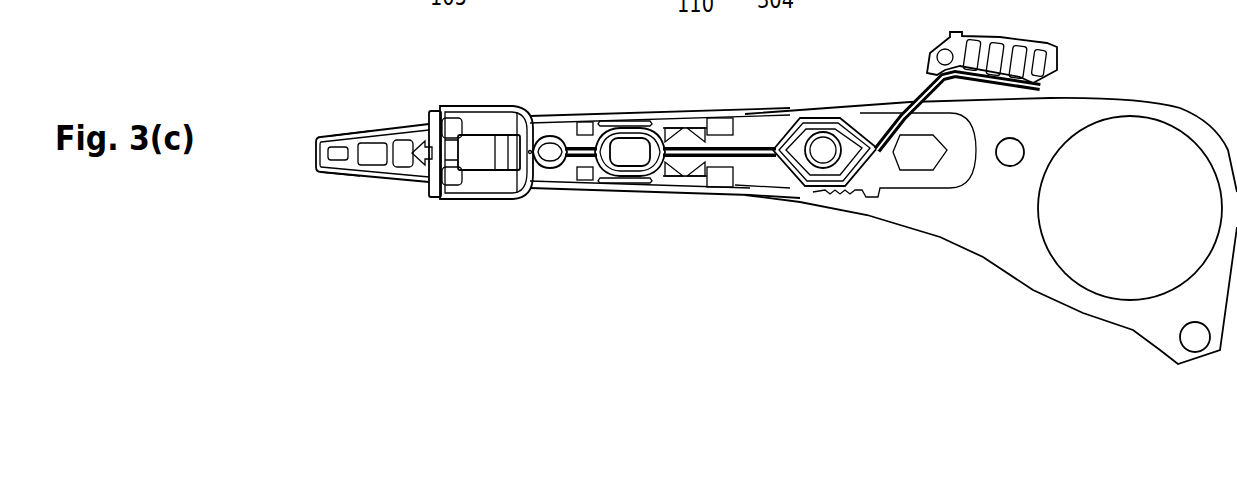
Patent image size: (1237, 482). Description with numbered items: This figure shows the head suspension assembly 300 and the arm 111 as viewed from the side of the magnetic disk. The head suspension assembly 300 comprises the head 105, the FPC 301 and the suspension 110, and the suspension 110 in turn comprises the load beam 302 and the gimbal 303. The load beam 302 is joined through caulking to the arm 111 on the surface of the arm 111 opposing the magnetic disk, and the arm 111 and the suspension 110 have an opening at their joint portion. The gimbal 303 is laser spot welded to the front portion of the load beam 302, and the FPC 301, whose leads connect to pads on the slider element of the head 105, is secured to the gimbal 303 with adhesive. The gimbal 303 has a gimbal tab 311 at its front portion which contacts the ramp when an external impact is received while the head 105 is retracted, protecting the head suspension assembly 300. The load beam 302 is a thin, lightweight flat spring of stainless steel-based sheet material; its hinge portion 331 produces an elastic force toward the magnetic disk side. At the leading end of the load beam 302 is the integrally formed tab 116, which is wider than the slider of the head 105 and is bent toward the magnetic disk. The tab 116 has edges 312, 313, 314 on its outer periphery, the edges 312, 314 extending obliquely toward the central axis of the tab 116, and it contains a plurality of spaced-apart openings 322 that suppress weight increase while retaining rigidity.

The head 105 is at (470, 163).
The suspension 110 is at (560, 101).
The arm 111 is at (952, 228).
The tab 116 is at (313, 163).
The head suspension assembly 300 is at (675, 243).
The FPC (flexible printed circuit) 301 is at (917, 90).
The load beam 302 is at (636, 110).
The gimbal 303 is at (510, 177).
The gimbal tab 311 is at (420, 122).
The edge 312 is at (325, 177).
The edge 313 is at (314, 150).
The edge 314 is at (347, 133).
The openings 322 is at (370, 163).
The hinge portion 331 is at (762, 180).